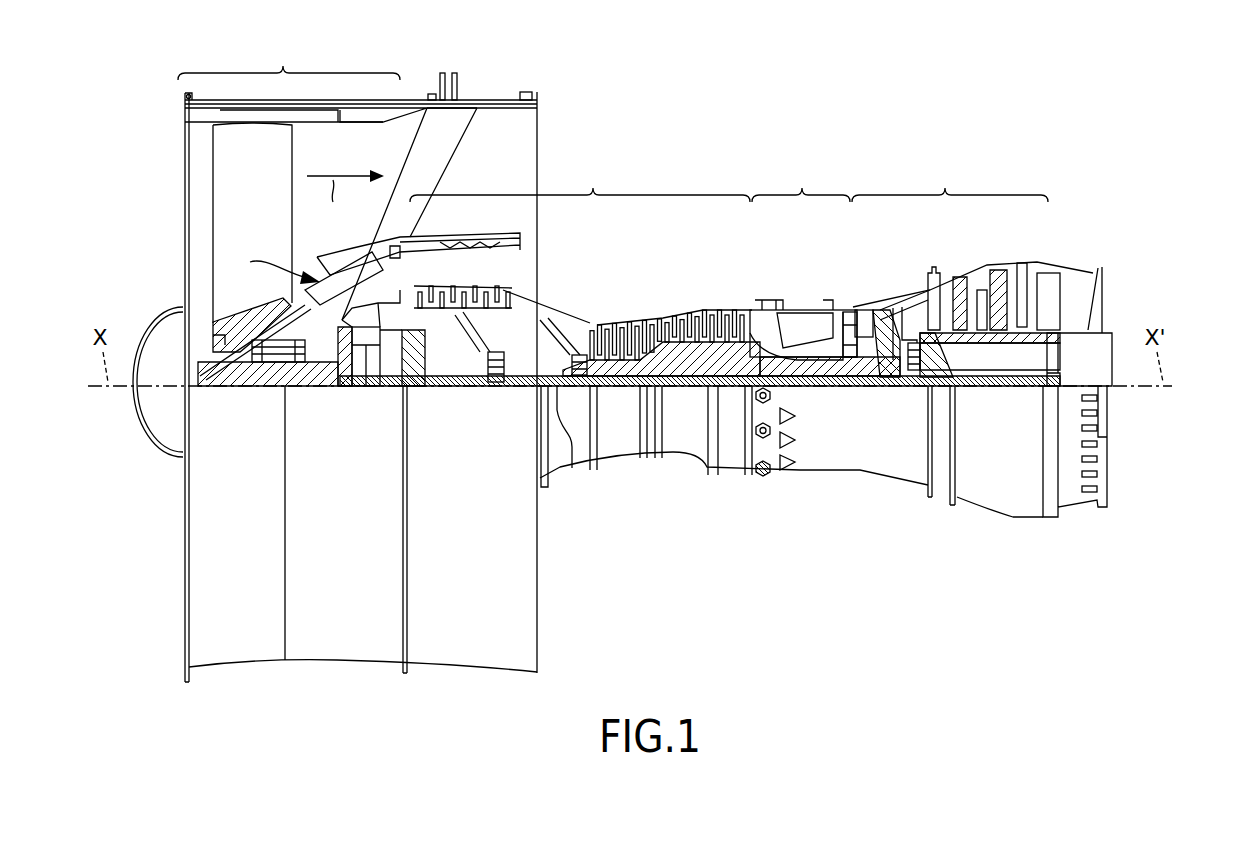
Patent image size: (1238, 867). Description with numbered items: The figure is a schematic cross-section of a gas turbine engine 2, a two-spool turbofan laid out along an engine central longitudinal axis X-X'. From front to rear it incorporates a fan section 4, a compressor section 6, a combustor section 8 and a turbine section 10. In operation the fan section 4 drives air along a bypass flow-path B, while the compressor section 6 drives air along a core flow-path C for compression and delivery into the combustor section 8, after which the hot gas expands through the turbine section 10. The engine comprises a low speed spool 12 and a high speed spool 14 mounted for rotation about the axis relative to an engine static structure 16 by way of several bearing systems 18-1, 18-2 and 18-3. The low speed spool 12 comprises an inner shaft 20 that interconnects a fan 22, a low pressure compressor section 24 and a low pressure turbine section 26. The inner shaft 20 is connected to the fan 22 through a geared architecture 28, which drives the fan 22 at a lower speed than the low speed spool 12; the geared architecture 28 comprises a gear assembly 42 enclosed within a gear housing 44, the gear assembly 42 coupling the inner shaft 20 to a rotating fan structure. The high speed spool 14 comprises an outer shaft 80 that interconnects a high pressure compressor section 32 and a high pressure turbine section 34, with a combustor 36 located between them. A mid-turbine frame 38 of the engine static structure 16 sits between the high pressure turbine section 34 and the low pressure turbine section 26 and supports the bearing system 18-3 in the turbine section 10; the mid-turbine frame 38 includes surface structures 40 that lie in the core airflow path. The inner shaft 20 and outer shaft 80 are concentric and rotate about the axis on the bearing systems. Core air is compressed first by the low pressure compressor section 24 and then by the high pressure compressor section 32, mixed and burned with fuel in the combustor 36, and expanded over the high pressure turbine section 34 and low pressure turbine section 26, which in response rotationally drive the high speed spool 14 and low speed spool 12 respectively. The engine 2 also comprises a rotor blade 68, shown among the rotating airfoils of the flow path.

The gas turbine engine 2 is at (853, 124).
The fan section 4 is at (289, 59).
The compressor section 6 is at (580, 179).
The combustor section 8 is at (801, 180).
The turbine section 10 is at (950, 180).
The low speed spool 12 is at (692, 404).
The high speed spool 14 is at (727, 357).
The engine static structure 16 is at (342, 645).
The bearing system 18-1 is at (262, 365).
The bearing system 18-2 is at (493, 380).
The bearing system 18-3 is at (905, 388).
The inner shaft 20 is at (560, 392).
The fan 22 is at (236, 219).
The low pressure compressor section 24 is at (473, 290).
The low pressure turbine section 26 is at (993, 277).
The geared architecture 28 is at (372, 404).
The high pressure compressor section 32 is at (673, 350).
The high pressure turbine section 34 is at (863, 310).
The combustor 36 is at (798, 330).
The mid-turbine frame 38 is at (902, 307).
The surface structures 40 is at (908, 310).
The gear assembly 42 is at (373, 368).
The gear housing 44 is at (377, 342).
The rotor blade 68 is at (840, 307).
The outer shaft 80 is at (803, 363).